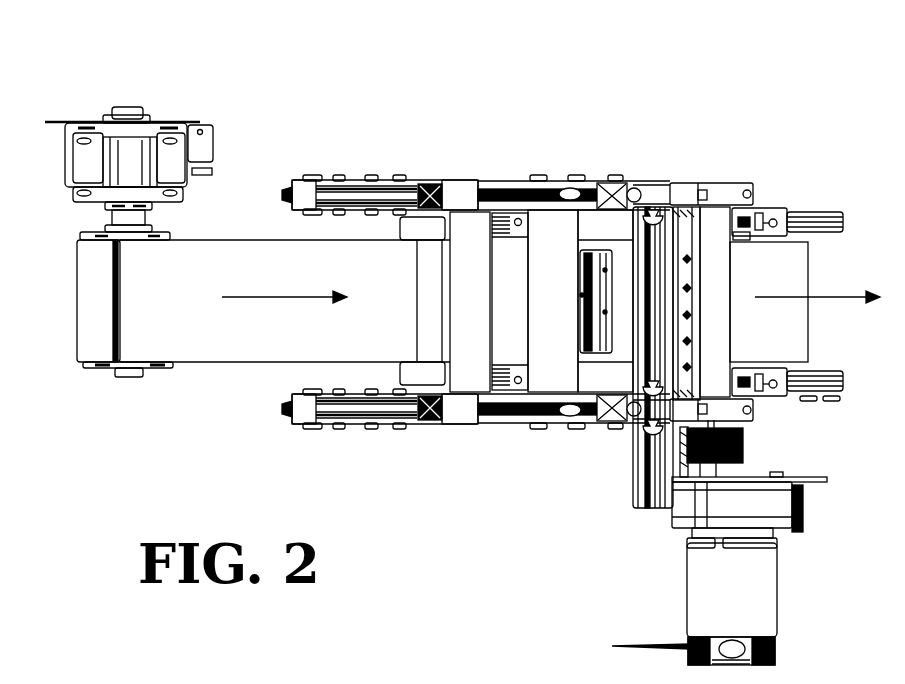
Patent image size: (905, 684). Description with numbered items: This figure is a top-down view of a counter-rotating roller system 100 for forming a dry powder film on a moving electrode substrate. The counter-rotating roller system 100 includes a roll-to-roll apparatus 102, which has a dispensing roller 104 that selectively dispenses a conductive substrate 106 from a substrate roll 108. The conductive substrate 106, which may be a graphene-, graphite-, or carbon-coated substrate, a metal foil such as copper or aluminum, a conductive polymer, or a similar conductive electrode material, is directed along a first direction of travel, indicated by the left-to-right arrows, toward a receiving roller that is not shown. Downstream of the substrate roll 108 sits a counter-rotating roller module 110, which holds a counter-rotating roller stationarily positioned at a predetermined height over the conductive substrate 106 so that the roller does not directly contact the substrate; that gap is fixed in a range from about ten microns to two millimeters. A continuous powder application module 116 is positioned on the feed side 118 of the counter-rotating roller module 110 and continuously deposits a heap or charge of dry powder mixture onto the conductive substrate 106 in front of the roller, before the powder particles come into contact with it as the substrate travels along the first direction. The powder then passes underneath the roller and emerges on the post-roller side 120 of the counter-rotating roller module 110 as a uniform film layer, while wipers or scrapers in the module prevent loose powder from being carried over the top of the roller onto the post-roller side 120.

The counter-rotating roller system 100 is at (847, 30).
The roll-to-roll apparatus 102 is at (855, 78).
The dispensing roller 104 is at (108, 371).
The conductive substrate 106 is at (291, 262).
The substrate roll 108 is at (88, 298).
The counter-rotating roller module 110 is at (475, 122).
The continuous powder application module 116 is at (525, 172).
The feed side 118 is at (475, 536).
The post-roller side 120 is at (875, 536).